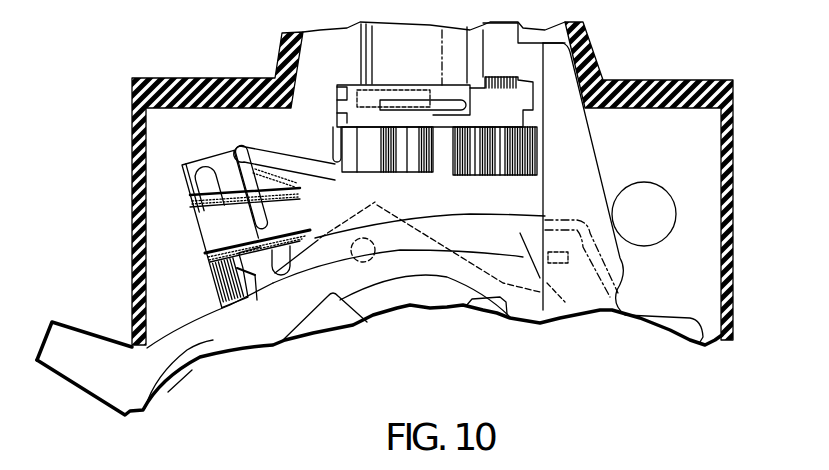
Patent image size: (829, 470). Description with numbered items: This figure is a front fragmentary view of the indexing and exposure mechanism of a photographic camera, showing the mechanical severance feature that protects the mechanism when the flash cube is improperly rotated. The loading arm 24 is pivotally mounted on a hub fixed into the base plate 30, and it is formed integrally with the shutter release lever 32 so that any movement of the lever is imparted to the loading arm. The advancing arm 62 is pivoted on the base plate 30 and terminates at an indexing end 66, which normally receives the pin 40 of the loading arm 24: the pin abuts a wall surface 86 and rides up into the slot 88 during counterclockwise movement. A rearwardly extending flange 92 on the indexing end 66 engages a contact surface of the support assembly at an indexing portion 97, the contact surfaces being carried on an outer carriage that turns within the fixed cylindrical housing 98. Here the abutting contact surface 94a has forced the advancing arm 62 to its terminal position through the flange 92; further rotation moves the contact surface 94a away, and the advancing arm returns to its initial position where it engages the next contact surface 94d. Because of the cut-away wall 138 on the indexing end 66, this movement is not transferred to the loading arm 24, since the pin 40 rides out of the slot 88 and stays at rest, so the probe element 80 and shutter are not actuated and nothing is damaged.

The loading arm 24 is at (295, 314).
The base plate 30 is at (172, 122).
The shutter release lever 32 is at (93, 372).
The pin 40 is at (372, 262).
The advancing arm 62 is at (474, 226).
The indexing end 66 is at (168, 183).
The probe element 80 is at (577, 182).
The wall surface 86 is at (210, 260).
The slot 88 is at (210, 227).
The rearwardly extending flange 92 is at (285, 163).
The contact surface 94a is at (368, 155).
The contact surface 94d is at (520, 152).
The indexing portion 97 is at (338, 152).
The cylindrical housing 98 is at (397, 38).
The cut-away wall 138 is at (256, 282).